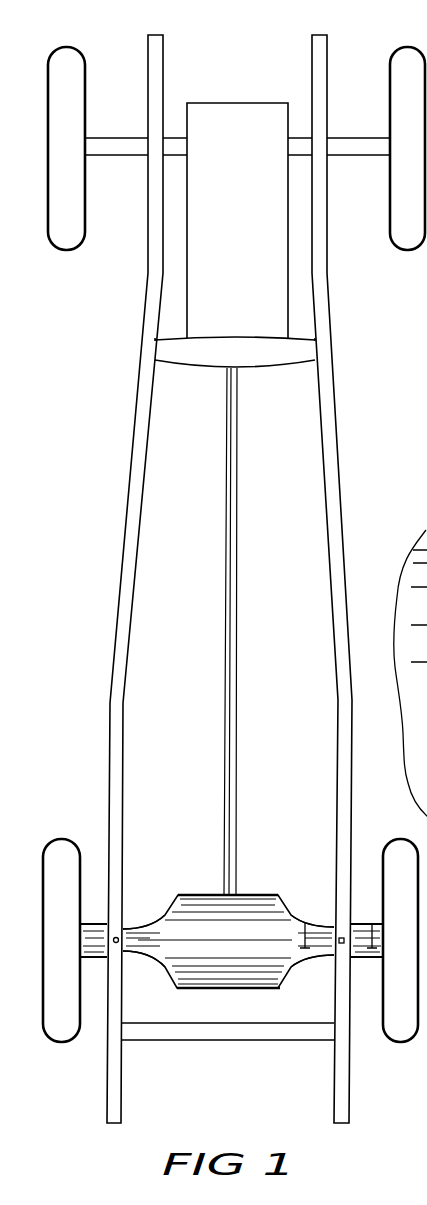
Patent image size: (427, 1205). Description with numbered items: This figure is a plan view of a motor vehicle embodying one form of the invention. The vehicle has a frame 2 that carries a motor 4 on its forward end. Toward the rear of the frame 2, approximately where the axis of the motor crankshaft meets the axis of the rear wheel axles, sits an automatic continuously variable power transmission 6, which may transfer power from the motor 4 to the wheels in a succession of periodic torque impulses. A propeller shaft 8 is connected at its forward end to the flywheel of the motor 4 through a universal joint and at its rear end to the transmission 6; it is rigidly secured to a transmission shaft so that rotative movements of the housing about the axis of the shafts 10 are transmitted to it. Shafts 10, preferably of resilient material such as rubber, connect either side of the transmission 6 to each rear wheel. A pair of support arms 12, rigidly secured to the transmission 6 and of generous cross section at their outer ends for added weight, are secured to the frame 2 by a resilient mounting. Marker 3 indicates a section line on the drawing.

The frame 2 is at (317, 301).
The section line 3 is at (338, 928).
The motor 4 is at (277, 240).
The automatic continuously variable power transmission 6 is at (257, 905).
The propeller shaft 8 is at (232, 635).
The shafts 10 is at (93, 954).
The support arms 12 is at (163, 925).